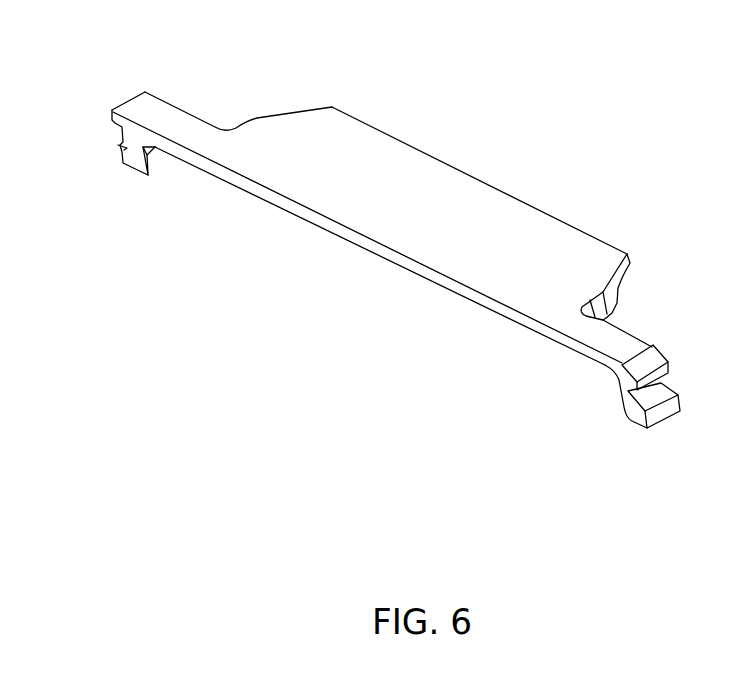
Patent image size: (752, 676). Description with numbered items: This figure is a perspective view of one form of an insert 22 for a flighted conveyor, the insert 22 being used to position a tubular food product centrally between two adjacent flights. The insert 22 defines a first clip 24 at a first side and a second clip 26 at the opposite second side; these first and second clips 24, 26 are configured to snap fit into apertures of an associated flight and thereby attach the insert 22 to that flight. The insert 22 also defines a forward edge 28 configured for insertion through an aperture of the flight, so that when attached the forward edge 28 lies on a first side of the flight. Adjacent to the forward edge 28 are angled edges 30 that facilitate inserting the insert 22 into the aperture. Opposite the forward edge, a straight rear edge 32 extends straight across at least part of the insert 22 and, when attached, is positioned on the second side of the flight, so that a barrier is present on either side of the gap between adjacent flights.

The insert 22 is at (612, 85).
The first clip 24 is at (120, 120).
The second clip 26 is at (628, 400).
The forward edge 28 is at (410, 146).
The angled edge 30 is at (292, 112).
The straight rear edge 32 is at (363, 240).